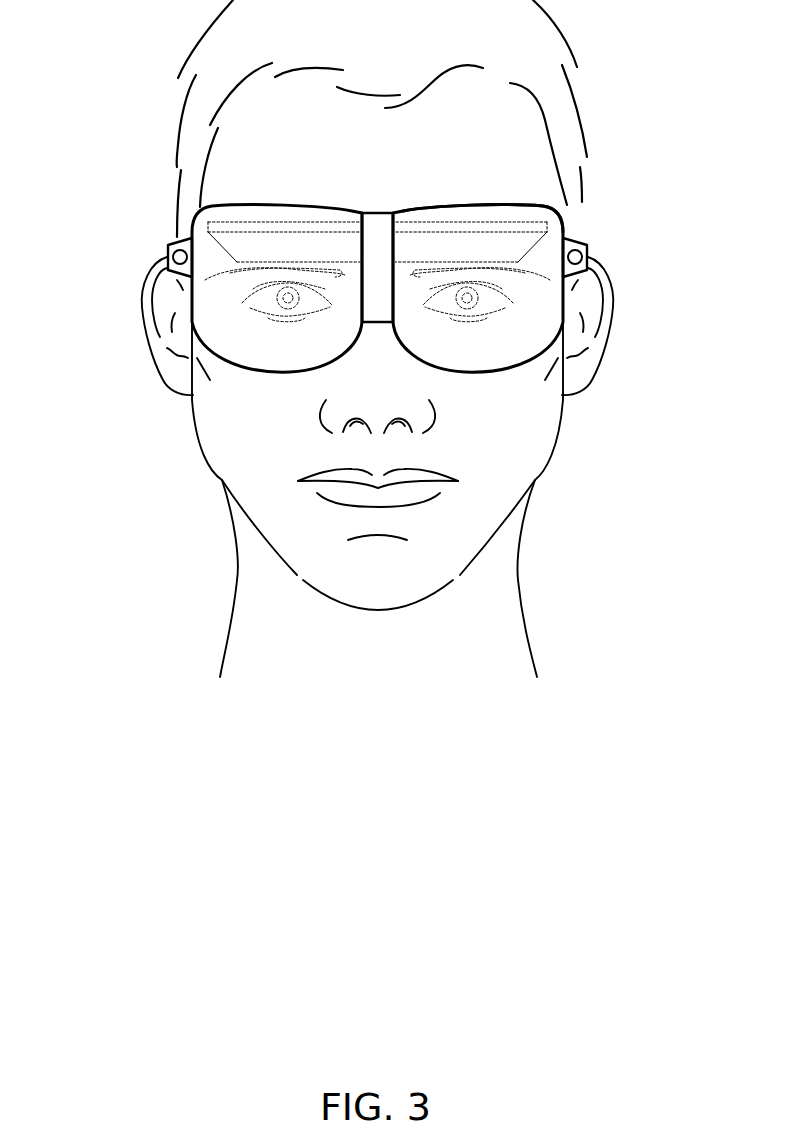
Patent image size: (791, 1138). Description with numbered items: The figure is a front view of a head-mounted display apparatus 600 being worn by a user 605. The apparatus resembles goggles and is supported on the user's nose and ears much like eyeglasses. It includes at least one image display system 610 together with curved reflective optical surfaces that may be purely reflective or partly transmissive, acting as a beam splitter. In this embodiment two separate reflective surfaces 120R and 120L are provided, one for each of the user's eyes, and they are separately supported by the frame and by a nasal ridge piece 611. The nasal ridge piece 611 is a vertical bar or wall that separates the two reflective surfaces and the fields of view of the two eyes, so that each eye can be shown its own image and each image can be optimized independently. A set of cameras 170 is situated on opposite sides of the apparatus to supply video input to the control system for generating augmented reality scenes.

The user 605 is at (178, 122).
The head-mounted display apparatus 600 is at (370, 313).
The image display system 610 is at (475, 215).
The nasal ridge piece 611 is at (377, 323).
The cameras 170 is at (168, 256).
The right reflective surface 120R is at (262, 340).
The left reflective surface 120L is at (493, 340).